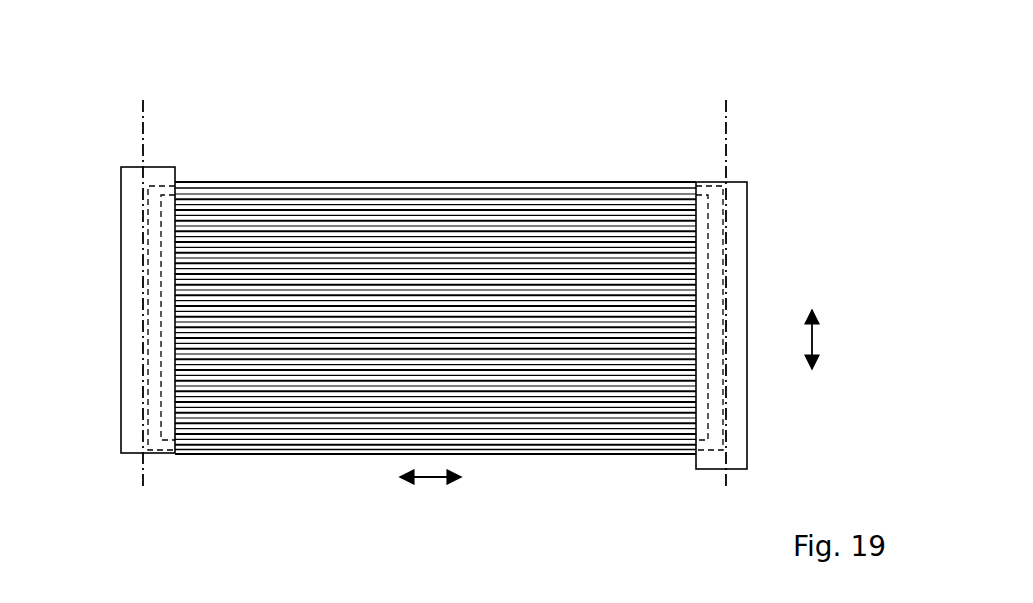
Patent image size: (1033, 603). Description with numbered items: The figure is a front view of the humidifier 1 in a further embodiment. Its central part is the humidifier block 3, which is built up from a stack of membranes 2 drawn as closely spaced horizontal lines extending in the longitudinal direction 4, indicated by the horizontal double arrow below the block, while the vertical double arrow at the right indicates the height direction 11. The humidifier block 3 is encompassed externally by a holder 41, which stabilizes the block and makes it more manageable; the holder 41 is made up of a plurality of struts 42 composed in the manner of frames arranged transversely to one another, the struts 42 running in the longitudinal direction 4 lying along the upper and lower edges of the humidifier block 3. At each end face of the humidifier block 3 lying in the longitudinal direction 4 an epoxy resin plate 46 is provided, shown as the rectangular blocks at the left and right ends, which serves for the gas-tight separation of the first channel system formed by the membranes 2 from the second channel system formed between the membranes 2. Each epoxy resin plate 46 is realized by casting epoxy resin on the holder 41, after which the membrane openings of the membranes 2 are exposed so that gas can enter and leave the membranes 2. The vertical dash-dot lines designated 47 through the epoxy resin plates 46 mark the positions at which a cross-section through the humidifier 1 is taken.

The humidifier 1 is at (836, 113).
The membranes 2 is at (376, 200).
The humidifier block 3 is at (578, 184).
The longitudinal direction 4 is at (424, 473).
The height direction 11 is at (806, 330).
The holder 41 is at (480, 172).
The struts 42 is at (312, 182).
The epoxy resin plate 46 is at (124, 236).
The section line 47 is at (134, 119).